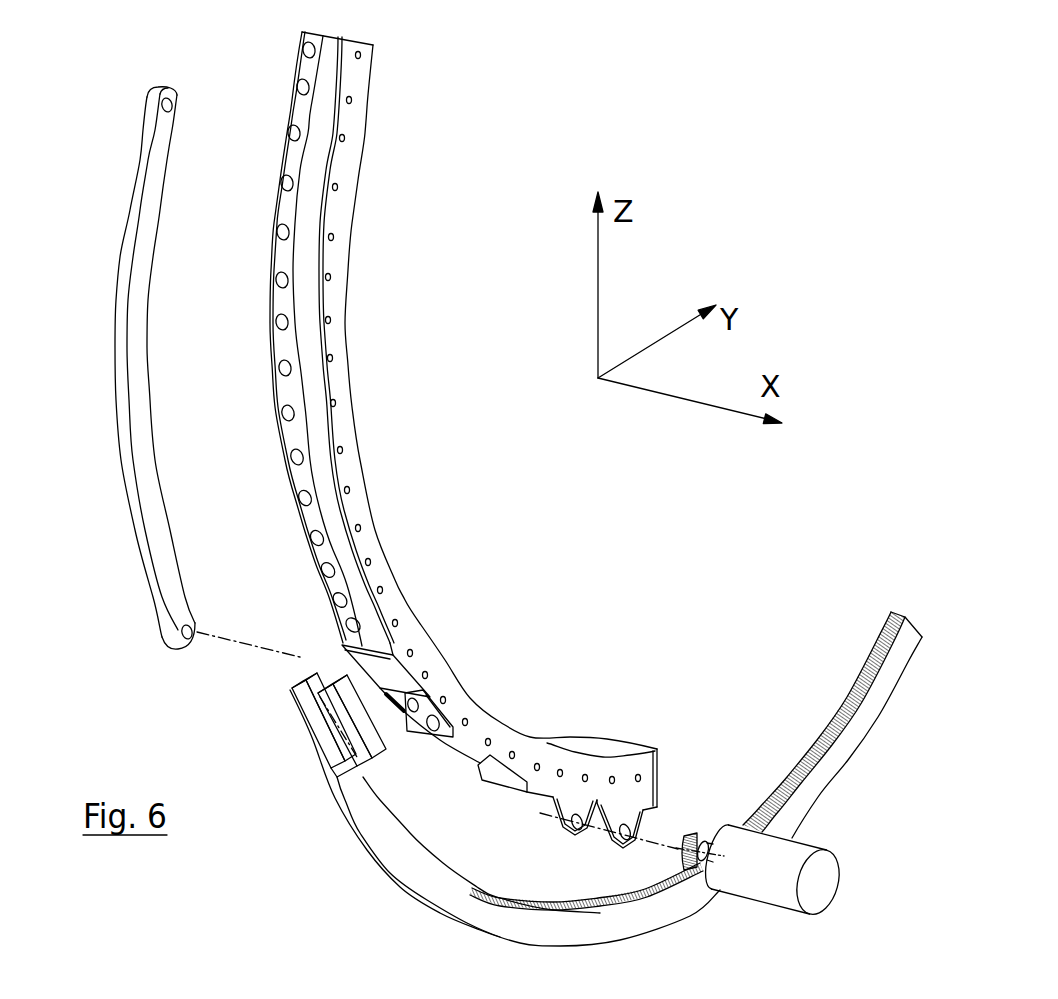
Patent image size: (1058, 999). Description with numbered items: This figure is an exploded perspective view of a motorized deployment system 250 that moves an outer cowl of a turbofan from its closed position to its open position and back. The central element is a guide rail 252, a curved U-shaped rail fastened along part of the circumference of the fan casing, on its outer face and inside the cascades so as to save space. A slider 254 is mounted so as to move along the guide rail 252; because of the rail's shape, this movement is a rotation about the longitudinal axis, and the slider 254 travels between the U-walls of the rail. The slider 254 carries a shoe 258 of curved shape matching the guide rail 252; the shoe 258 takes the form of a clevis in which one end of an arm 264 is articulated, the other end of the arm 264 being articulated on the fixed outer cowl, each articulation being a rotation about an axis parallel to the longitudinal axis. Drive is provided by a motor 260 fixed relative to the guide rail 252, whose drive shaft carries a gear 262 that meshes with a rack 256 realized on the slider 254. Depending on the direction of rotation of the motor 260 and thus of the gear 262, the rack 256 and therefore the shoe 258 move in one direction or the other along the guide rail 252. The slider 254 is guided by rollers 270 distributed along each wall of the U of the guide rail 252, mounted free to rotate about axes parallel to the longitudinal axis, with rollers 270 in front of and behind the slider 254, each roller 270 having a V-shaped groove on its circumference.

The deployment system 250 is at (572, 508).
The guide rail 252 is at (357, 510).
The slider 254 is at (373, 824).
The rack 256 is at (867, 667).
The shoe 258 is at (323, 748).
The motor 260 is at (803, 857).
The gear 262 is at (690, 830).
The arm 264 is at (142, 157).
The rollers 270 is at (307, 48).